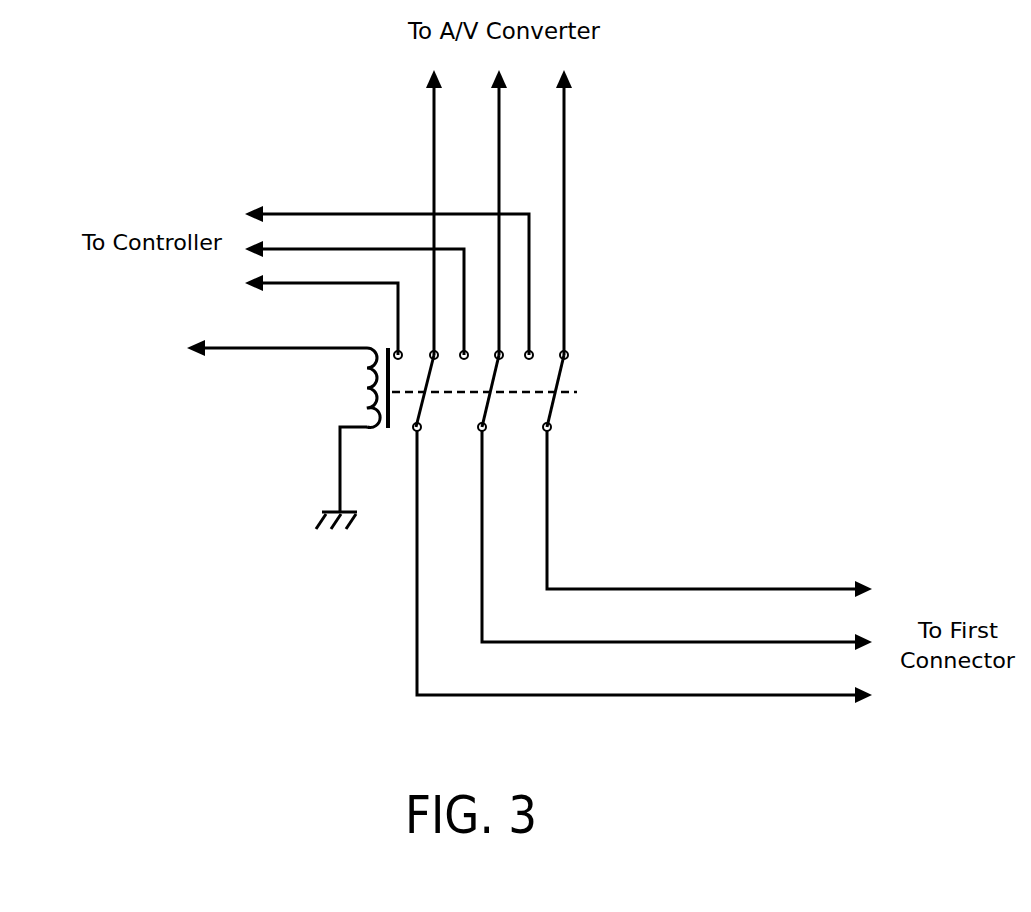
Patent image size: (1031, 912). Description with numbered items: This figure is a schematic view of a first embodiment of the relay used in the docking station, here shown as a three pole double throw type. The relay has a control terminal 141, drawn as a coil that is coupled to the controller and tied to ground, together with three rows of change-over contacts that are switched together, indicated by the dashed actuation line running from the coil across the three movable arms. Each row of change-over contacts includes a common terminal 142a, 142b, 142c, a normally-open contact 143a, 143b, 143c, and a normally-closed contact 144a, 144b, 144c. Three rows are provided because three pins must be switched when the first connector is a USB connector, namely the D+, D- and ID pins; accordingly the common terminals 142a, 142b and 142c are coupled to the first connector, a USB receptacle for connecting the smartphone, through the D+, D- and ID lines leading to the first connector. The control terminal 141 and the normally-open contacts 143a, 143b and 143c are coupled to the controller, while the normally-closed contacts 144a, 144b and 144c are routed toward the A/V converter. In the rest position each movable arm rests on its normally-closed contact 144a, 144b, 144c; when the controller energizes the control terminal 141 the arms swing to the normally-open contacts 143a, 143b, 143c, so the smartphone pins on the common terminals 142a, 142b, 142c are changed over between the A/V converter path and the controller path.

The control terminal 141 is at (260, 348).
The common terminal 142a is at (547, 432).
The common terminal 142b is at (482, 432).
The common terminal 142c is at (417, 432).
The normally-open contact 143a is at (529, 355).
The normally-open contact 143b is at (464, 355).
The normally-open contact 143c is at (398, 355).
The normally-closed contact 144a is at (564, 355).
The normally-closed contact 144b is at (499, 357).
The normally-closed contact 144c is at (434, 357).